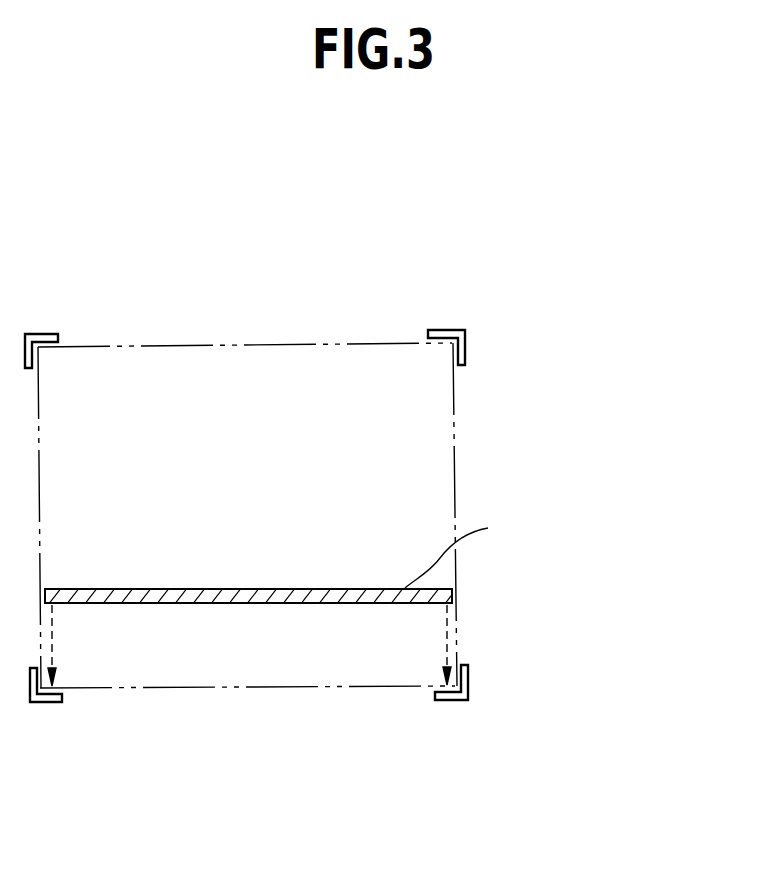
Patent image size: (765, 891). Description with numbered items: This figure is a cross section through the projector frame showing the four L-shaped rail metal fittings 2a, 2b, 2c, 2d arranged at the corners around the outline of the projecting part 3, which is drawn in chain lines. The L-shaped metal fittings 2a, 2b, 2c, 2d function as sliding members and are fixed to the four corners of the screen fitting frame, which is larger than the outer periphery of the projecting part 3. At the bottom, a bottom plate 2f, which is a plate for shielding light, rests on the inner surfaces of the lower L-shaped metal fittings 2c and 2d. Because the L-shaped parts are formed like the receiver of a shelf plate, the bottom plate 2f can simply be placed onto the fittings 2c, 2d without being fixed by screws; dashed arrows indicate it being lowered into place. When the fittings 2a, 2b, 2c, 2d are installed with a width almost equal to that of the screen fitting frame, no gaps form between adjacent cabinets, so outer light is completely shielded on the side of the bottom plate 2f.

The projecting part 3 is at (265, 345).
The L-shaped rail metal fitting 2a is at (52, 334).
The L-shaped rail metal fitting 2b is at (455, 330).
The L-shaped rail metal fitting 2c is at (455, 700).
The L-shaped rail metal fitting 2d is at (45, 703).
The bottom plate 2f is at (260, 589).